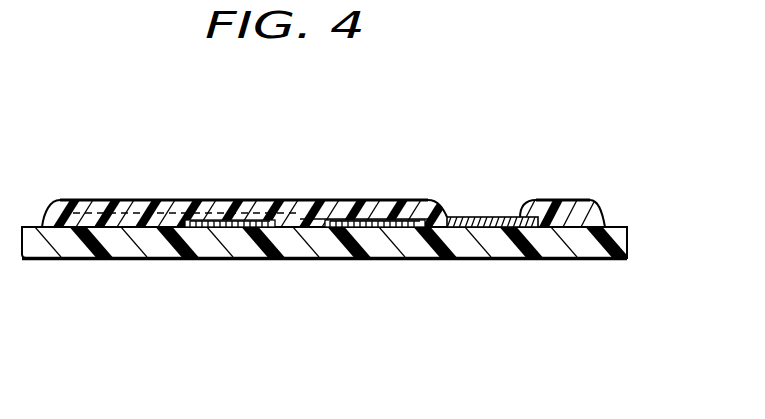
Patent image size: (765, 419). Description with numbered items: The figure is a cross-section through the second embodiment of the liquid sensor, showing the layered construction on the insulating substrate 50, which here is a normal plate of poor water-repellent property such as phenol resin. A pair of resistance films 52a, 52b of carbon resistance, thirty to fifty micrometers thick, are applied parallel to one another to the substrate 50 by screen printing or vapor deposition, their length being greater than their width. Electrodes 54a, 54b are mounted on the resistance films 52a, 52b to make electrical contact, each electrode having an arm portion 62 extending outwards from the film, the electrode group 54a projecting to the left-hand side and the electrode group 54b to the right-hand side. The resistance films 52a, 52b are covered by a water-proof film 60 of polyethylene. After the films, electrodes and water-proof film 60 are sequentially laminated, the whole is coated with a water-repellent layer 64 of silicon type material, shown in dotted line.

The insulating substrate 50 is at (500, 247).
The resistance film 52a is at (230, 225).
The resistance film 52b is at (367, 225).
The electrode 54a is at (223, 203).
The electrode 54b is at (482, 217).
The water-proof film 60 is at (307, 212).
The arm portion 62 is at (113, 197).
The water-repellent layer 64 is at (157, 200).